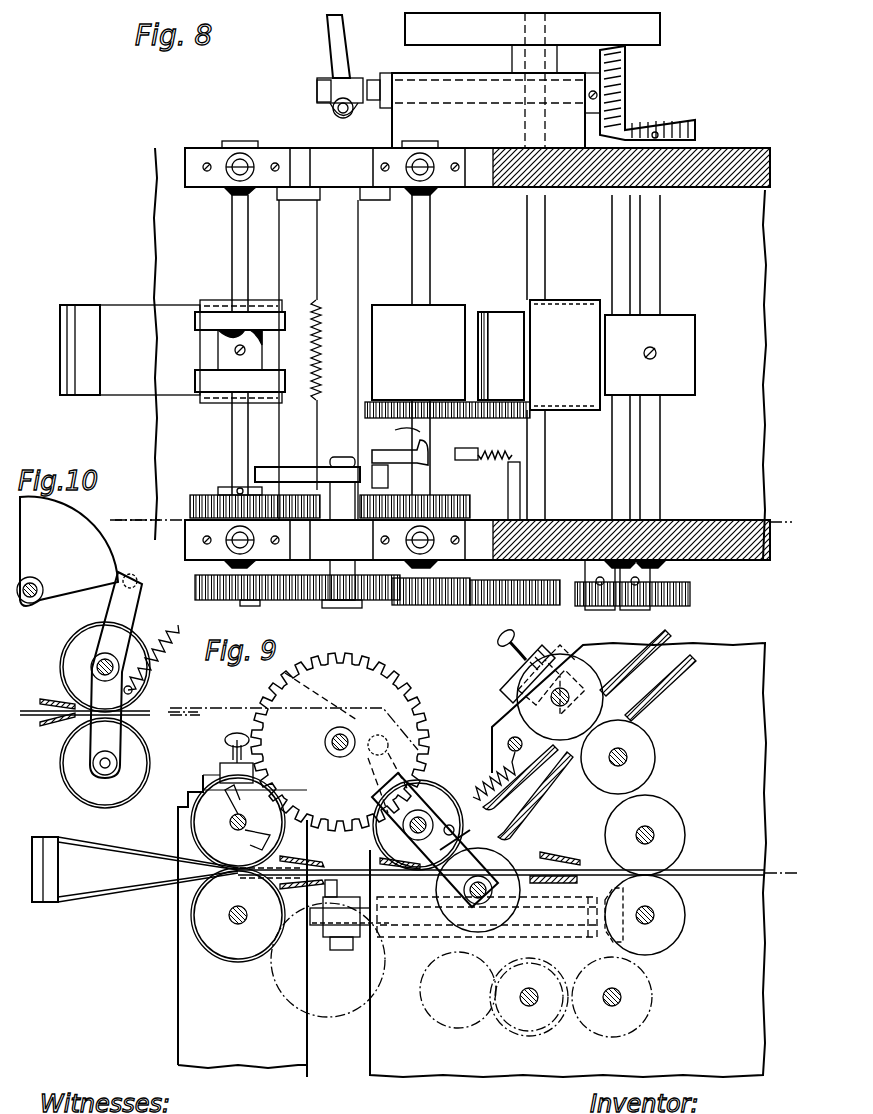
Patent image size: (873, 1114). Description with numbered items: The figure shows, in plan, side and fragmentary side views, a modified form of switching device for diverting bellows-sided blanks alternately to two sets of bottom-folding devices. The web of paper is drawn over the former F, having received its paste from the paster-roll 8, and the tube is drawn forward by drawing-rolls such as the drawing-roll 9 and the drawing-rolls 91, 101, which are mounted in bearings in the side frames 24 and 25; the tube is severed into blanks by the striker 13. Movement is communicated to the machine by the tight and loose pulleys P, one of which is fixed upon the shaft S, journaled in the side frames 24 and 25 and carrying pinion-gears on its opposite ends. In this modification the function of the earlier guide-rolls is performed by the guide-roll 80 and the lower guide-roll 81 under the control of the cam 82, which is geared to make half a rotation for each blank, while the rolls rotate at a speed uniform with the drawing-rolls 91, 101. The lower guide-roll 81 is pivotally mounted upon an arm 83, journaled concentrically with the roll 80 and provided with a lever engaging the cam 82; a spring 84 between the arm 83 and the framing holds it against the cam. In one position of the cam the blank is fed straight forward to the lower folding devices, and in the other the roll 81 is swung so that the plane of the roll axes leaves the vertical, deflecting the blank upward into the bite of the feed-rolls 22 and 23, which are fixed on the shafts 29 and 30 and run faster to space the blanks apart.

In FIG. 8, the tight and loose pulleys P is at (660, 30).
In FIG. 8, the striker 13 is at (332, 50).
In FIG. 8, the side frame 25 is at (738, 160).
In FIG. 9, the side frame 25 is at (568, 860).
In FIG. 8, the side frame 24 is at (736, 548).
In FIG. 8, the shaft S is at (535, 243).
In FIG. 8, the drawing-roll 91 is at (205, 380).
In FIG. 9, the drawing-roll 91 is at (200, 820).
In FIG. 9, the drawing-roll 101 is at (210, 915).
In FIG. 8, the guide-roll 80 is at (447, 361).
In FIG. 10, the guide-roll 80 is at (85, 655).
In FIG. 9, the guide-roll 80 is at (430, 790).
In FIG. 8, the lower guide-roll 81 is at (501, 356).
In FIG. 10, the lower guide-roll 81 is at (105, 763).
In FIG. 9, the lower guide-roll 81 is at (500, 920).
In FIG. 8, the cam 82 is at (318, 475).
In FIG. 10, the cam 82 is at (77, 551).
In FIG. 9, the cam 82 is at (322, 700).
In FIG. 8, the arm 83 is at (417, 458).
In FIG. 10, the arm 83 is at (116, 675).
In FIG. 9, the arm 83 is at (435, 840).
In FIG. 8, the spring 84 is at (488, 460).
In FIG. 10, the spring 84 is at (166, 648).
In FIG. 9, the spring 84 is at (492, 766).
In FIG. 8, the drawing-roll 9 is at (457, 532).
In FIG. 10, the drawing-roll 9 is at (137, 528).
In FIG. 10, the paster-roll 8 is at (184, 724).
In FIG. 9, the paster-roll 8 is at (789, 886).
In FIG. 9, the former F is at (135, 869).
In FIG. 9, the shaft 29 is at (549, 683).
In FIG. 9, the feed-roll 22 is at (620, 799).
In FIG. 9, the shaft 30 is at (618, 757).
In FIG. 9, the feed-roll 23 is at (645, 864).